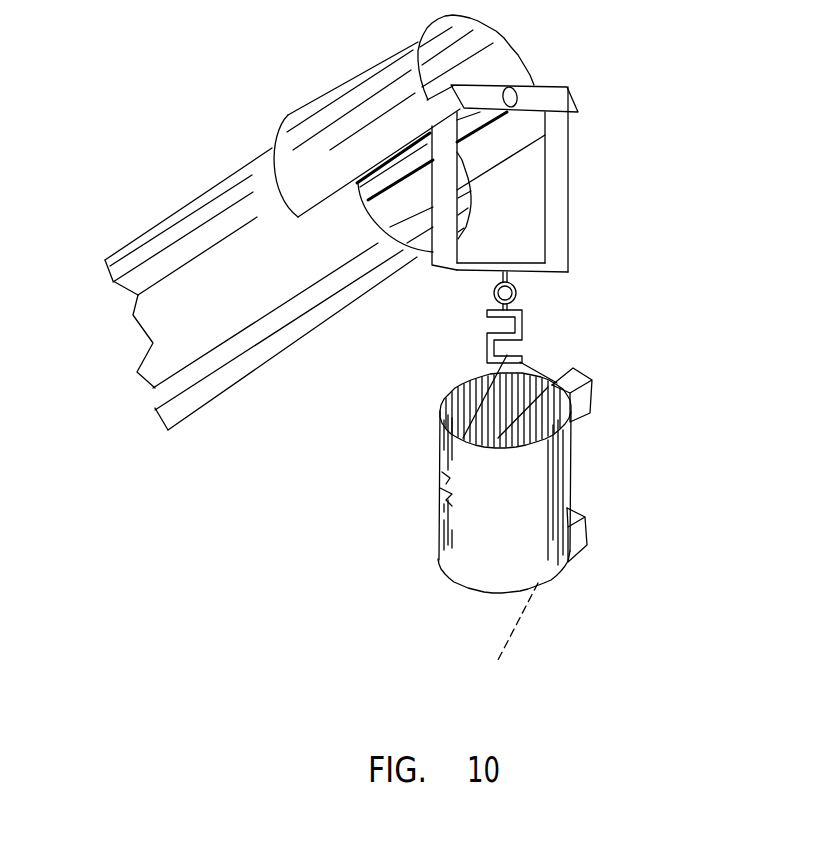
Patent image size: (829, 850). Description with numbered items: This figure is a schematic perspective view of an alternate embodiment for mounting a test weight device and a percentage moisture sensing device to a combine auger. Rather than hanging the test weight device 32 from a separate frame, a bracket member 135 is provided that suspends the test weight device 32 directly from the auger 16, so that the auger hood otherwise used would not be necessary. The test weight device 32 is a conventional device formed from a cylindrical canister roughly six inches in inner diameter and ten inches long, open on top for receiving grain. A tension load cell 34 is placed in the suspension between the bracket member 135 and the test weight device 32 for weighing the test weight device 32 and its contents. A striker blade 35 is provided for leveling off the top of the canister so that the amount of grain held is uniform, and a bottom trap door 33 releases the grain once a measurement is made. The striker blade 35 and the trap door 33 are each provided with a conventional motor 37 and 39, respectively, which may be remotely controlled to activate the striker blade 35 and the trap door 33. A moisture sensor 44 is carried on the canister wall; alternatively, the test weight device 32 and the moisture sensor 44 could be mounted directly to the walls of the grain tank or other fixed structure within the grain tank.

The auger 16 is at (200, 343).
The bracket member 135 is at (558, 232).
The tension load cell 34 is at (522, 327).
The test weight device 32 is at (612, 476).
The striker blade 35 is at (520, 422).
The motor 37 is at (585, 397).
The motor 39 is at (583, 539).
The moisture sensor 44 is at (440, 485).
The trap door 33 is at (522, 628).